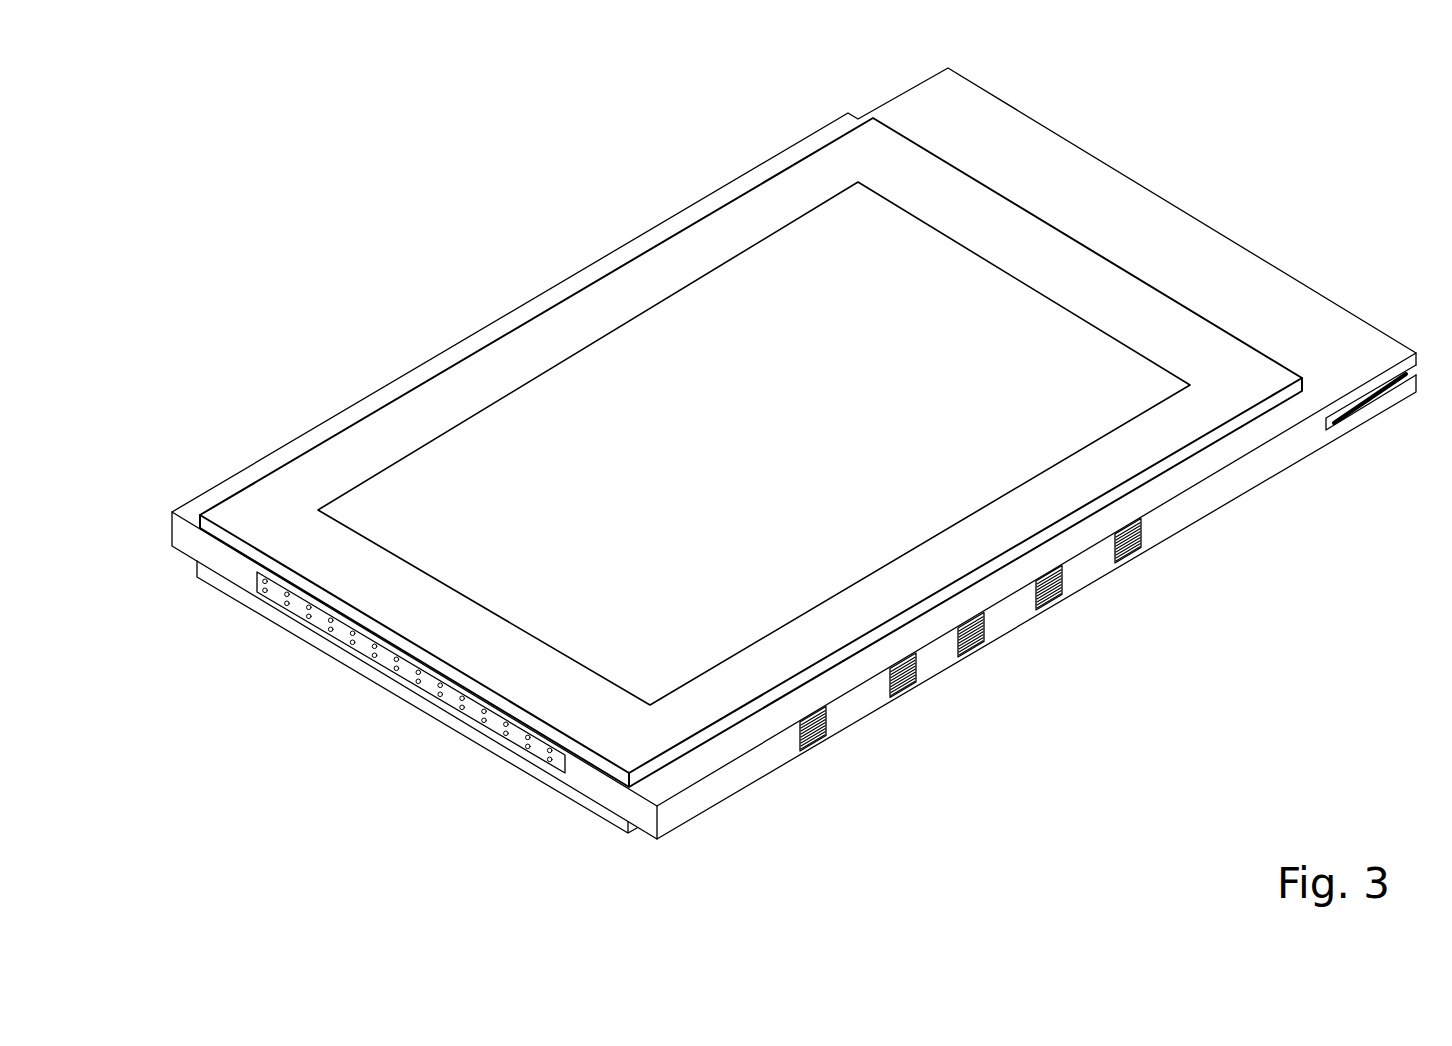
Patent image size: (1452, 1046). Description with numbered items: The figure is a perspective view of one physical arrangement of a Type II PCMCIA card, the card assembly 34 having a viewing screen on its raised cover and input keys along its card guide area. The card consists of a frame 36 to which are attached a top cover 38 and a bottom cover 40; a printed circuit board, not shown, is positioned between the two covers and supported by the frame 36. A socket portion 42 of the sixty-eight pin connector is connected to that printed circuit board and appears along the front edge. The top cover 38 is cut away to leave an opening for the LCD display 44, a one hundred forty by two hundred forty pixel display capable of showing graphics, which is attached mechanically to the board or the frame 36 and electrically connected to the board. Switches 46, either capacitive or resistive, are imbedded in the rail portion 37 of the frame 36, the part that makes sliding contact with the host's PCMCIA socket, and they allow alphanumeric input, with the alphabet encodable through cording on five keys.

The display assembly 34 is at (532, 263).
The frame 36 is at (793, 140).
The rail portion 37 is at (1237, 487).
The top cover 38 is at (250, 508).
The bottom cover 40 is at (242, 600).
The socket portion 42 is at (555, 778).
The LCD display 44 is at (775, 437).
The switches 46 is at (824, 738).